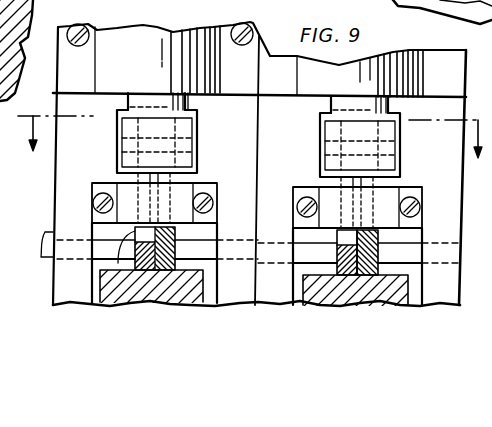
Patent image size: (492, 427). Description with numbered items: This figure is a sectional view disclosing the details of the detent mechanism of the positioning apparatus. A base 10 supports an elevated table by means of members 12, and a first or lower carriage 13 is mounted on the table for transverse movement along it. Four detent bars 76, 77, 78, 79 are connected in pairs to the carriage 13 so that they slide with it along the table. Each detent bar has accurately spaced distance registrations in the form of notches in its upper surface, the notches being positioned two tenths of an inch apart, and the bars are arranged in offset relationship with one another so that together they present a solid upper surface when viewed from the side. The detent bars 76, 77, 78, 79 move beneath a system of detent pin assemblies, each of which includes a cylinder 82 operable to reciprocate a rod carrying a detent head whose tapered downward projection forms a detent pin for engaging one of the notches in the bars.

The base 10 is at (254, 148).
The members 12 is at (134, 294).
The first carriage 13 is at (45, 234).
The detent bar 76 is at (380, 237).
The detent bar 77 is at (337, 237).
The detent bar 78 is at (175, 240).
The detent bar 79 is at (125, 255).
The cylinder 82 is at (312, 73).